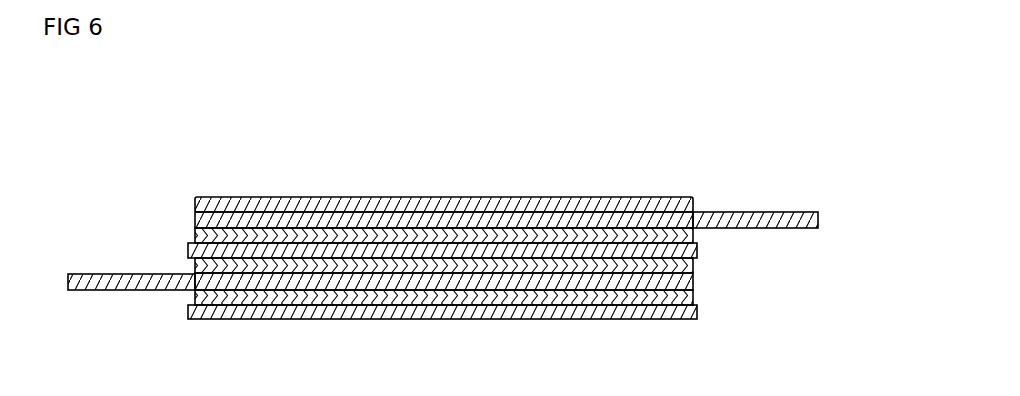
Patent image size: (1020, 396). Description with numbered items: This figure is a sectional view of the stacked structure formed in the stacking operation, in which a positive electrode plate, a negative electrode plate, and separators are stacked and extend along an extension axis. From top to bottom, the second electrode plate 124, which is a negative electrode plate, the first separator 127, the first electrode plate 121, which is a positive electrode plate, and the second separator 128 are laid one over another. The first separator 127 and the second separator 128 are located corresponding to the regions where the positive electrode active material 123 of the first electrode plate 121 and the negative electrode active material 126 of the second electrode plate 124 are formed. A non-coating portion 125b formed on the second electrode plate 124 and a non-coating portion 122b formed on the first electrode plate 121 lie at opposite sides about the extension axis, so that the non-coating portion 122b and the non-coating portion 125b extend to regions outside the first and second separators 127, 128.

The first electrode plate 121 is at (693, 283).
The non-coating portion 122b is at (138, 281).
The positive electrode active material 123 is at (424, 262).
The second electrode plate 124 is at (195, 213).
The non-coating portion 125b is at (757, 212).
The negative electrode active material 126 is at (345, 198).
The first separator 127 is at (489, 242).
The second separator 128 is at (568, 306).